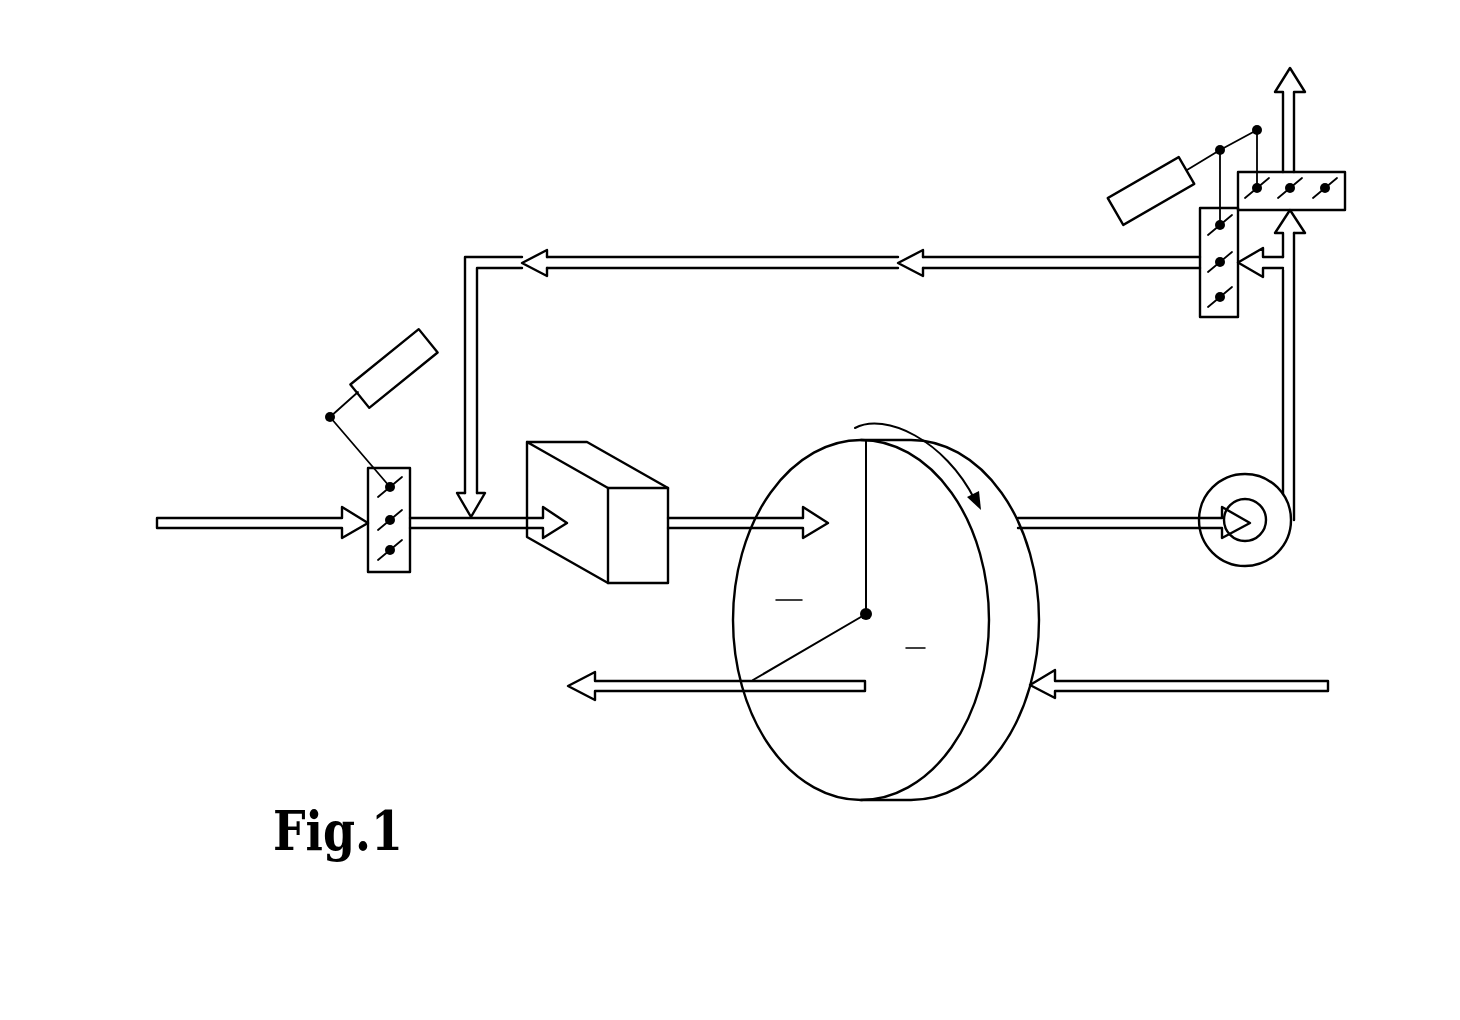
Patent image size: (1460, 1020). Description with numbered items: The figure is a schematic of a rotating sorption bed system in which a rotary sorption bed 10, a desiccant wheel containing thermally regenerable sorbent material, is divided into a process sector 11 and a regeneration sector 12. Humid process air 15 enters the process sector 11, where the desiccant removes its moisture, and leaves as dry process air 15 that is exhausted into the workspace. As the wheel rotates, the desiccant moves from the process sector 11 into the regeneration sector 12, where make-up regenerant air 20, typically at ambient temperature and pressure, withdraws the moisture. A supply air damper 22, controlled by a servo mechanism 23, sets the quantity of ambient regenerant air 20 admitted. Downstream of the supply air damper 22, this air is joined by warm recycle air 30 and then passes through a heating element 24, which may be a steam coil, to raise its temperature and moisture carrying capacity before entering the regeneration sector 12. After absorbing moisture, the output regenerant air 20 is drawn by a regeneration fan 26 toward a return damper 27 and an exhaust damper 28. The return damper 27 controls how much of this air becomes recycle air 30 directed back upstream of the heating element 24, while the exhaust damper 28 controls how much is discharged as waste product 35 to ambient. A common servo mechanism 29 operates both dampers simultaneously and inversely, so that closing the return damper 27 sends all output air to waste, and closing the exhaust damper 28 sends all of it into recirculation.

The rotary sorption bed 10 is at (893, 648).
The process sector 11 is at (915, 638).
The regeneration sector 12 is at (789, 590).
The process air 15 is at (633, 692).
The regenerant air 20 is at (178, 529).
The supply air damper 22 is at (377, 547).
The servo mechanism 23 is at (413, 331).
The heating element 24 is at (596, 455).
The regeneration fan 26 is at (1290, 512).
The return damper 27 is at (1205, 290).
The exhaust damper 28 is at (1340, 198).
The servo mechanism 29 is at (1152, 168).
The recycle air 30 is at (848, 257).
The waste product 35 is at (1296, 113).